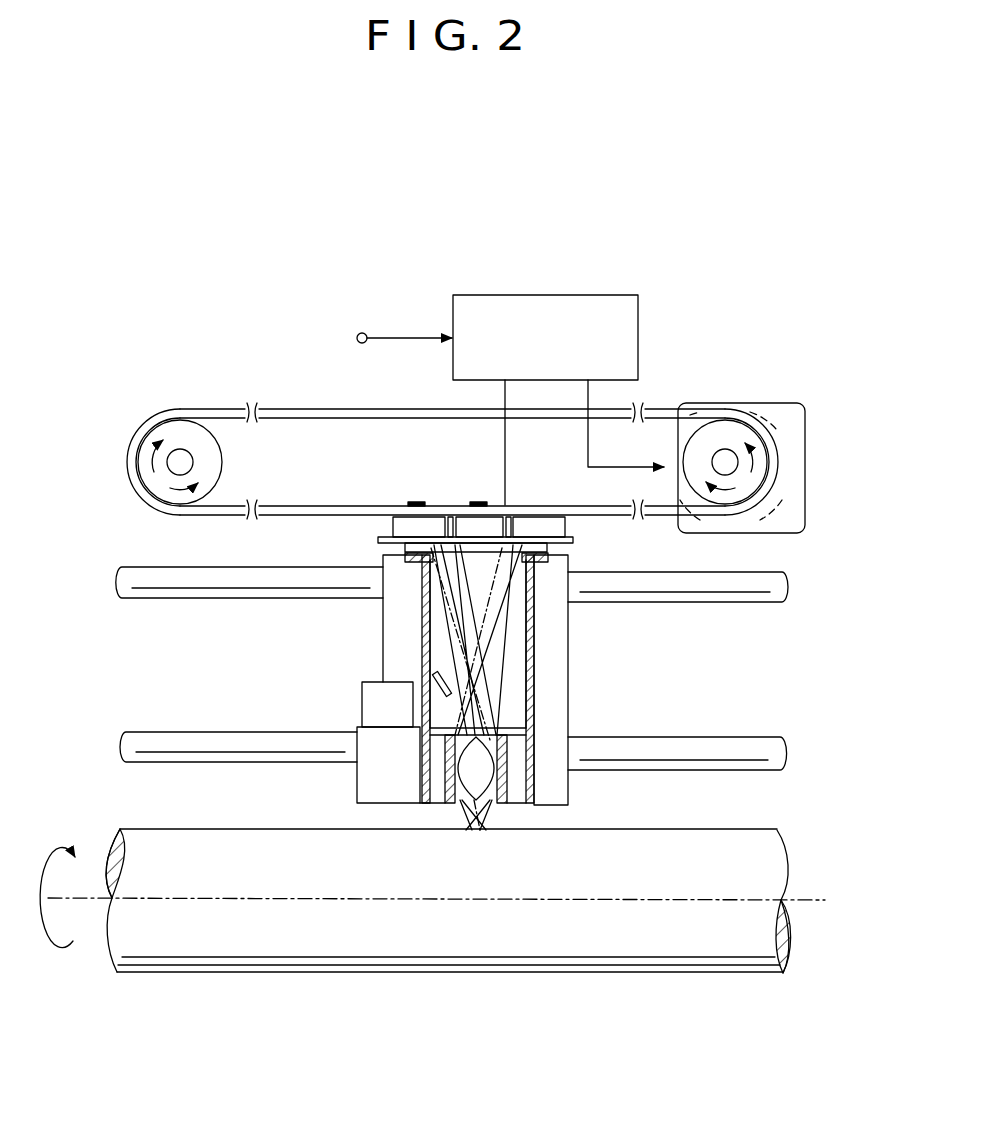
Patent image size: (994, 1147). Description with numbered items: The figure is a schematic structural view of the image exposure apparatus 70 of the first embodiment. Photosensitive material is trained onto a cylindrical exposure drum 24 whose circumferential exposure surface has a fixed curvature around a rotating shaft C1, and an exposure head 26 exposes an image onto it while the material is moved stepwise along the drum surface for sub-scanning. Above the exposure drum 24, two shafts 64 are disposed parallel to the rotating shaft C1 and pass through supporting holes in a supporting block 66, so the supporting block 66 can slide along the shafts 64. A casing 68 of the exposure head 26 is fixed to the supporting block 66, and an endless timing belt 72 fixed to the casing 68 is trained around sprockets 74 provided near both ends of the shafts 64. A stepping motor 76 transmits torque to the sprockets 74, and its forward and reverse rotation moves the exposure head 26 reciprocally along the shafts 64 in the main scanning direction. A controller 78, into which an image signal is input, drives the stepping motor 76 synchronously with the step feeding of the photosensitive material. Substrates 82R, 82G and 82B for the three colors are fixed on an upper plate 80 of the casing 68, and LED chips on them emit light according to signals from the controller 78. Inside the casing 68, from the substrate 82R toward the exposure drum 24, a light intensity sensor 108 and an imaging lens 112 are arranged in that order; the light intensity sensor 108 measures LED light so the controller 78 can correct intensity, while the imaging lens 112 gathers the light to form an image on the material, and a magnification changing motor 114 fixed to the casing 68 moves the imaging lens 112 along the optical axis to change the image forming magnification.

The image exposure apparatus 70 is at (674, 260).
The controller 78 is at (615, 295).
The timing belt 72 is at (410, 406).
The sprockets 74 is at (186, 428).
The stepping motor 76 is at (800, 404).
The exposure head 26 is at (456, 512).
The substrate 82R is at (465, 541).
The substrate 82G is at (378, 541).
The substrate 82B is at (573, 546).
The upper plate 80 is at (565, 553).
The supporting block 66 is at (398, 625).
The casing 68 is at (530, 641).
The shafts 64 is at (757, 590).
The light intensity sensor 108 is at (440, 682).
The magnification changing motor 114 is at (374, 703).
The imaging lens 112 is at (515, 790).
The exposure drum 24 is at (647, 972).
The rotating shaft C1 is at (803, 898).